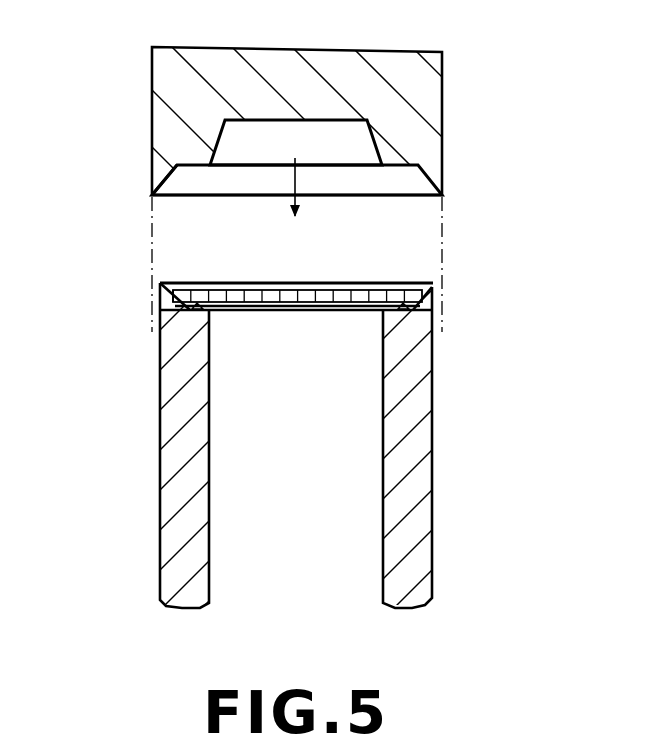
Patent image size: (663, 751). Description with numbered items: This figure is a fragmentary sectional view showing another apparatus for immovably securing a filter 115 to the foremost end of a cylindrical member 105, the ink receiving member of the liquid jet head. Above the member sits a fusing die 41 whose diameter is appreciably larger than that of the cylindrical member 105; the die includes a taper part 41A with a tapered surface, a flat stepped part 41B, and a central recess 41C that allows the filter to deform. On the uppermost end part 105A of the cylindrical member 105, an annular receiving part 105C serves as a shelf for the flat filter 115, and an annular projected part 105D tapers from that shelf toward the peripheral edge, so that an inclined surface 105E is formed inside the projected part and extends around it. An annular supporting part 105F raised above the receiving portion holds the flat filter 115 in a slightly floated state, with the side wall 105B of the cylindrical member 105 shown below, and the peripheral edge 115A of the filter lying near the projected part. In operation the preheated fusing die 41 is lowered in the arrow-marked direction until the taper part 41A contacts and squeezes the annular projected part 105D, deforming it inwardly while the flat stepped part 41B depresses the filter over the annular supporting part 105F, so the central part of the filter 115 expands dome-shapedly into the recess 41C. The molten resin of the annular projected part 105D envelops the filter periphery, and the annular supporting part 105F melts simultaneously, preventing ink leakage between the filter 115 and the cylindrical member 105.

The fusing die 41 is at (165, 110).
The taper part 41A is at (436, 174).
The flat stepped part 41B is at (193, 170).
The recess 41C is at (273, 133).
The cylindrical member 105 is at (156, 408).
The uppermost end part 105A is at (172, 318).
The right side wall of frame 105B is at (357, 435).
The annular receiving part 105C is at (330, 311).
The annular projected part 105D is at (430, 296).
The inclined surface 105E is at (417, 281).
The annular supporting part 105F is at (213, 311).
The filter 115 is at (328, 291).
The edge of grid member 115A is at (180, 282).